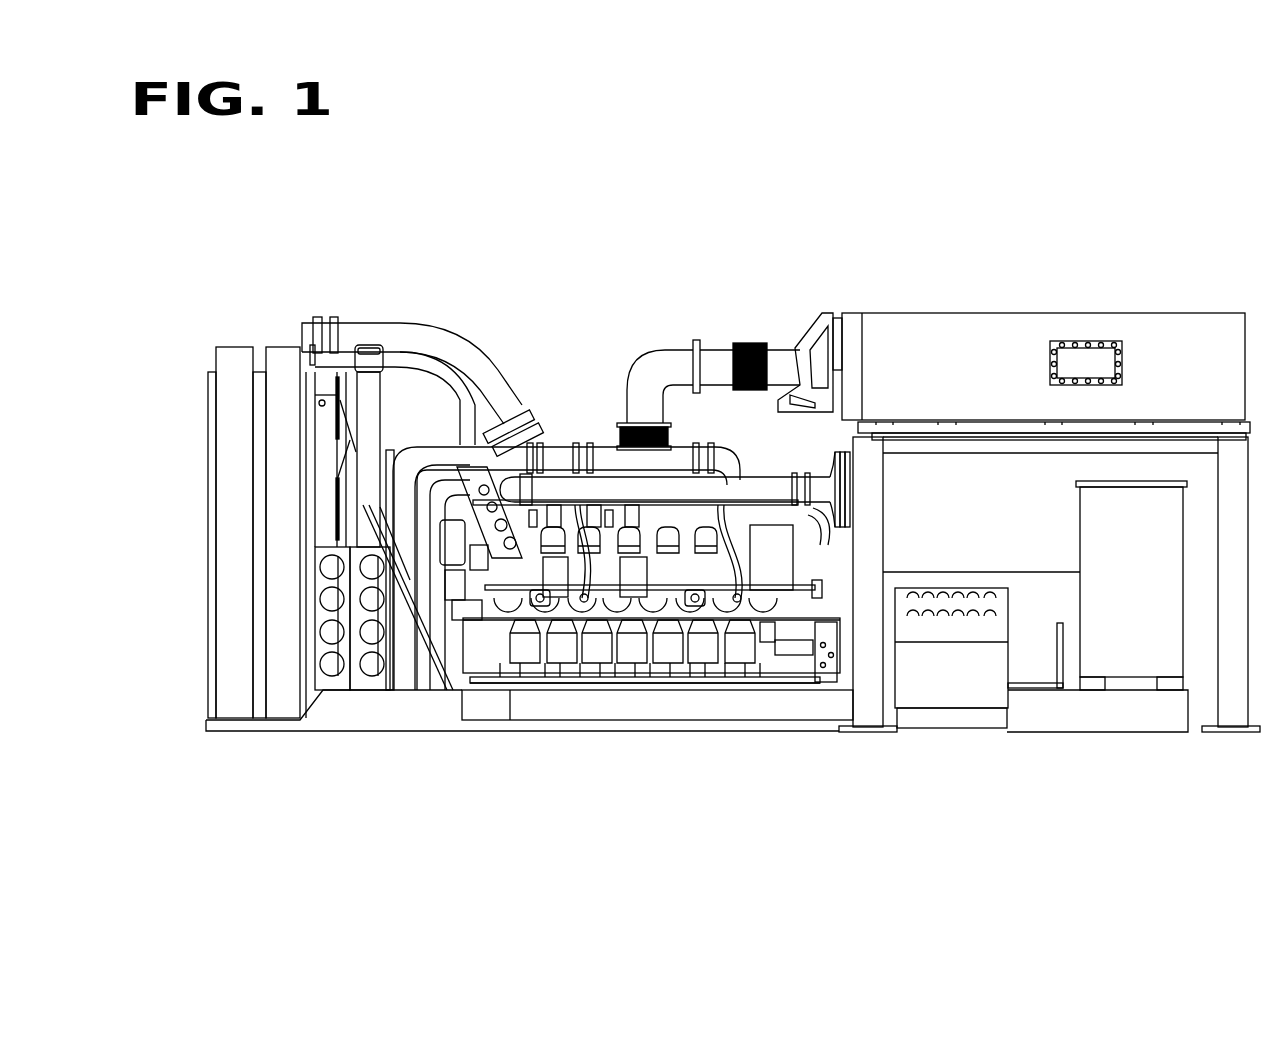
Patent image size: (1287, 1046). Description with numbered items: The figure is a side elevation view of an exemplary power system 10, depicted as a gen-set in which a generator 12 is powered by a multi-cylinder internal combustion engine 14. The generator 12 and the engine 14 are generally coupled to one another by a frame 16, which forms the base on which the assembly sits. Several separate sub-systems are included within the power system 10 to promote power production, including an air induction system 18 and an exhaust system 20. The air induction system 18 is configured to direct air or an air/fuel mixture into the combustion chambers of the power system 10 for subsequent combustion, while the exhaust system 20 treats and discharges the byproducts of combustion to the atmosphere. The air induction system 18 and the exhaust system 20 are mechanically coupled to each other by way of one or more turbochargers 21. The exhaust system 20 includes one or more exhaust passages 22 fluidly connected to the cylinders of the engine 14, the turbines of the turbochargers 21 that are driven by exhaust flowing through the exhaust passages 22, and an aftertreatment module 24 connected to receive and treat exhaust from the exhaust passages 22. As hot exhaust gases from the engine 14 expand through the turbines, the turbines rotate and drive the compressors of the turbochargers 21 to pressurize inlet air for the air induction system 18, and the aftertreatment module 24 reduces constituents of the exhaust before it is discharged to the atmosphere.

The power system 10 is at (558, 238).
The generator 12 is at (1200, 750).
The multi-cylinder internal combustion engine 14 is at (855, 750).
The frame 16 is at (352, 718).
The air induction system 18 is at (772, 480).
The exhaust system 20 is at (682, 220).
The turbocharger 21 is at (606, 458).
The exhaust passage 22 is at (640, 362).
The aftertreatment module 24 is at (868, 296).